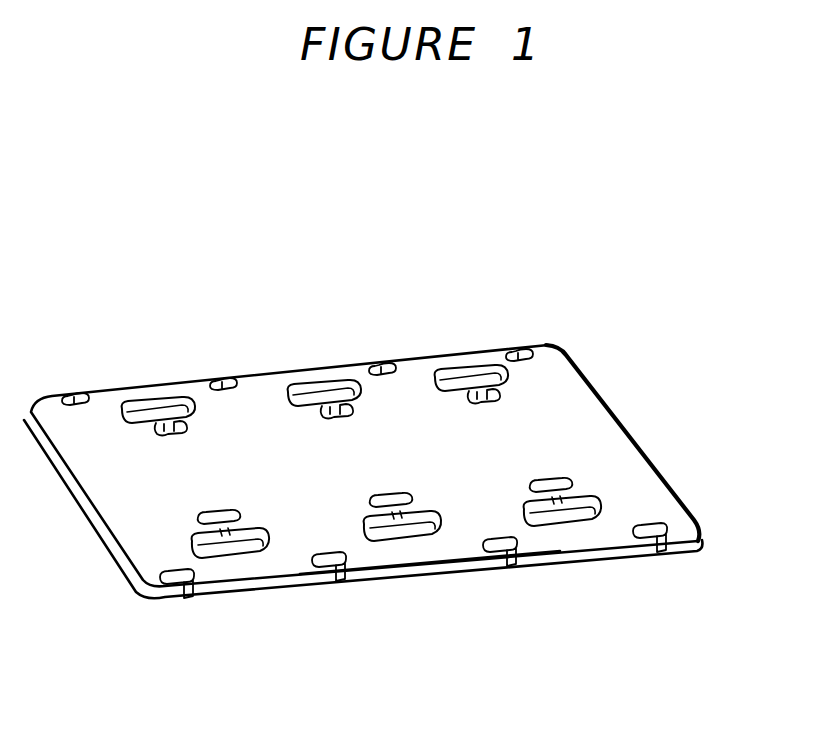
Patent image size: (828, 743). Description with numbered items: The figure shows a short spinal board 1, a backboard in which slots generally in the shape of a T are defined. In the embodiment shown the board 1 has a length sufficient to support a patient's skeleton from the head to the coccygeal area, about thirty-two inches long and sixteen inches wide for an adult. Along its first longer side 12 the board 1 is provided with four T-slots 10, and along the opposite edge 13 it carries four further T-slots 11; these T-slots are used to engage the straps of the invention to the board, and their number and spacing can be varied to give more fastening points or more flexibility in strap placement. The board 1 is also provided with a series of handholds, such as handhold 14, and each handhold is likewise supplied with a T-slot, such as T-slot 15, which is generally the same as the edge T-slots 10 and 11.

The spinal board 1 is at (623, 472).
The T-slots 10 is at (193, 597).
The T-slots 11 is at (65, 392).
The first longer side 12 is at (450, 573).
The edge 13 is at (313, 367).
The handhold 14 is at (463, 377).
The T-slot 15 is at (478, 404).